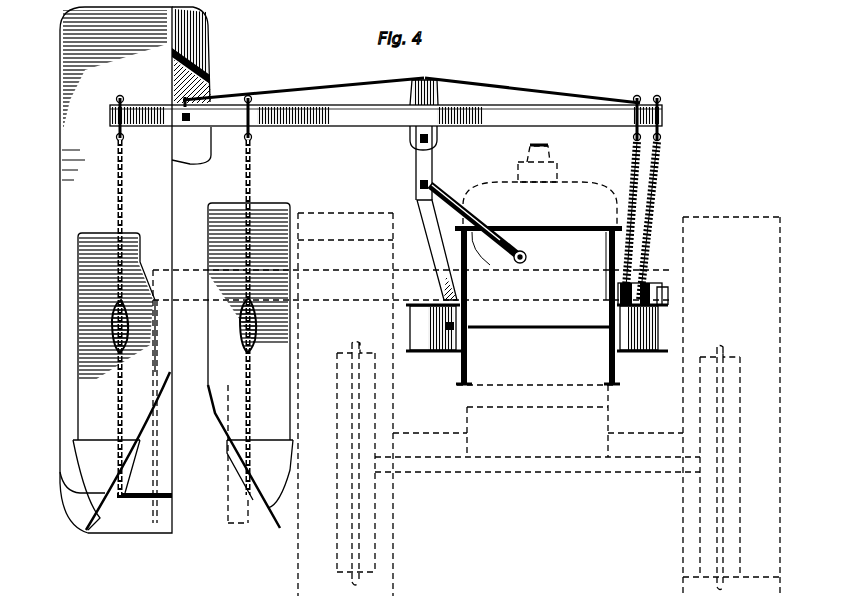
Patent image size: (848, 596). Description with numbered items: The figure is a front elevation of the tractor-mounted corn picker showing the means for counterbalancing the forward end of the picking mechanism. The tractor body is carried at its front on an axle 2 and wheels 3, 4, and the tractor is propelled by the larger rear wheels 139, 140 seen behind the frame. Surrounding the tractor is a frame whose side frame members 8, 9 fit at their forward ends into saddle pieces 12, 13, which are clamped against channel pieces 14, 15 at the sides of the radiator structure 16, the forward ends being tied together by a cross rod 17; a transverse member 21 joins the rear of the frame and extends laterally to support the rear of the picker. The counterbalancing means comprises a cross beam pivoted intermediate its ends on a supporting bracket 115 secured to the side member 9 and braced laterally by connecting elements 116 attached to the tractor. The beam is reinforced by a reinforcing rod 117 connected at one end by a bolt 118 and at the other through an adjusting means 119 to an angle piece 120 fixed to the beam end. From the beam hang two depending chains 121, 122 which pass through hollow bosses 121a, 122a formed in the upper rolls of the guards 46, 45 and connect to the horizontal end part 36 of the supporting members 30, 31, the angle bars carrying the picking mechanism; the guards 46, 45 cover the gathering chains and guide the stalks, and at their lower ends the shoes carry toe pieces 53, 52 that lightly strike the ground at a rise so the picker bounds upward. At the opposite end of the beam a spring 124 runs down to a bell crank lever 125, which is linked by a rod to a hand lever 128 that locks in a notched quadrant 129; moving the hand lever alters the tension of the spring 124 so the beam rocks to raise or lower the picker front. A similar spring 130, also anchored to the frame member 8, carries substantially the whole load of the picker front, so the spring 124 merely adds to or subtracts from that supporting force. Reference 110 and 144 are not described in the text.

The hood 144 is at (186, 80).
The bolt 118 is at (195, 100).
The reinforcing rod 117 is at (452, 82).
The cross beam 110 is at (517, 115).
The angle piece 120 is at (632, 103).
The adjusting means 119 is at (637, 105).
The hand lever 128 is at (640, 137).
The spring 130 is at (655, 170).
The spring 124 is at (634, 170).
The supporting bracket 115 is at (420, 167).
The connecting elements 116 is at (430, 200).
The channel piece 15 is at (472, 230).
The radiator structure 16 is at (543, 238).
The transverse member 21 is at (408, 277).
The channel piece 14 is at (607, 247).
The bell crank lever 125 is at (613, 278).
The notched quadrant 129 is at (657, 283).
The frame member 8 is at (640, 320).
The frame member 9 is at (430, 328).
The saddle piece 13 is at (460, 360).
The cross rod 17 is at (532, 331).
The saddle piece 12 is at (615, 368).
The depending chain 121 is at (118, 153).
The depending chain 122 is at (252, 152).
The hollow boss 121a is at (113, 347).
The hollow boss 122a is at (255, 350).
The guard 46 is at (83, 423).
The guard 45 is at (273, 427).
The toe piece 53 is at (86, 530).
The toe piece 52 is at (275, 528).
The supporting member 30 is at (237, 508).
The horizontal end part 36 is at (143, 510).
The supporting member 31 is at (173, 518).
The axle 2 is at (585, 470).
The tractor propelling wheel 140 is at (381, 509).
The wheel 4 is at (370, 563).
The tractor propelling wheel 139 is at (762, 490).
The wheel 3 is at (732, 555).